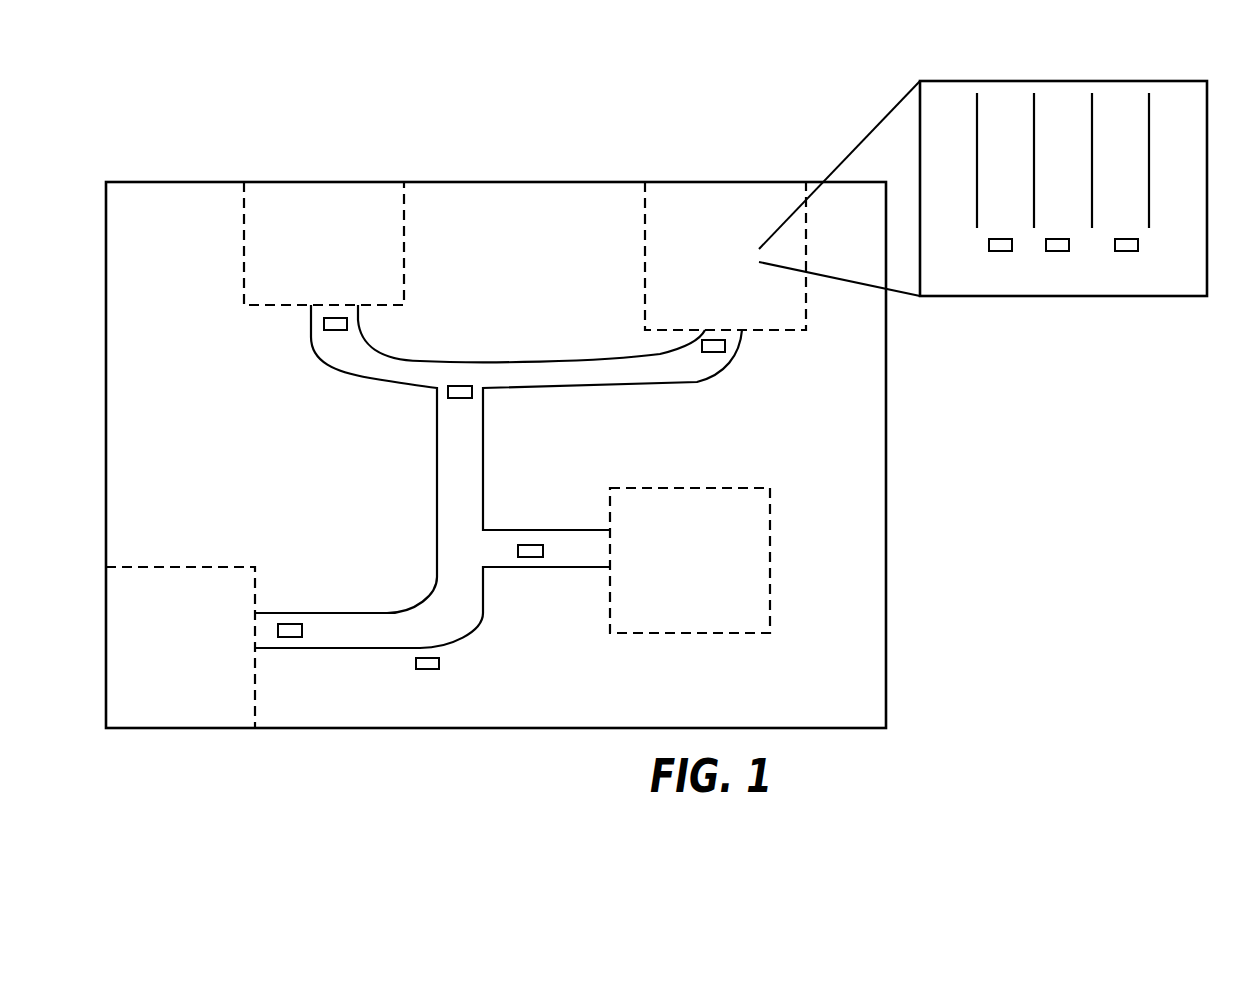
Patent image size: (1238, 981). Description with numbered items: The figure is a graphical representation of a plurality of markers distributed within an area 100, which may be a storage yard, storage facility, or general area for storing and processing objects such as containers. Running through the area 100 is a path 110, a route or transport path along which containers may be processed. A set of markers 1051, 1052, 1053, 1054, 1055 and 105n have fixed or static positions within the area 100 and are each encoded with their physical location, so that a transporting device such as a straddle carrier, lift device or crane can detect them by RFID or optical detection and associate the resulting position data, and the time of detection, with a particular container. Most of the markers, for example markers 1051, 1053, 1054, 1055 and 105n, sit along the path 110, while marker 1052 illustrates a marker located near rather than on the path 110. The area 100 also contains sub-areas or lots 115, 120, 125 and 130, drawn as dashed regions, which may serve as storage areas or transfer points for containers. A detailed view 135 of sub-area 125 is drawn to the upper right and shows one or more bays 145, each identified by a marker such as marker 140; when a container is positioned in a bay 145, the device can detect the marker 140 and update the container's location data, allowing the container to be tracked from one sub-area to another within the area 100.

The area 100 is at (518, 181).
The marker 1051 is at (290, 624).
The marker 1052 is at (438, 667).
The marker 1053 is at (530, 545).
The marker 1054 is at (472, 397).
The marker 1055 is at (335, 331).
The marker 105n is at (713, 352).
The path 110 is at (437, 475).
The sub-area 115 is at (182, 566).
The sub-area 120 is at (404, 259).
The sub-area 125 is at (645, 283).
The sub-area 130 is at (673, 488).
The detailed view 135 is at (920, 80).
The marker 140 is at (1058, 252).
The bay 145 is at (1058, 113).